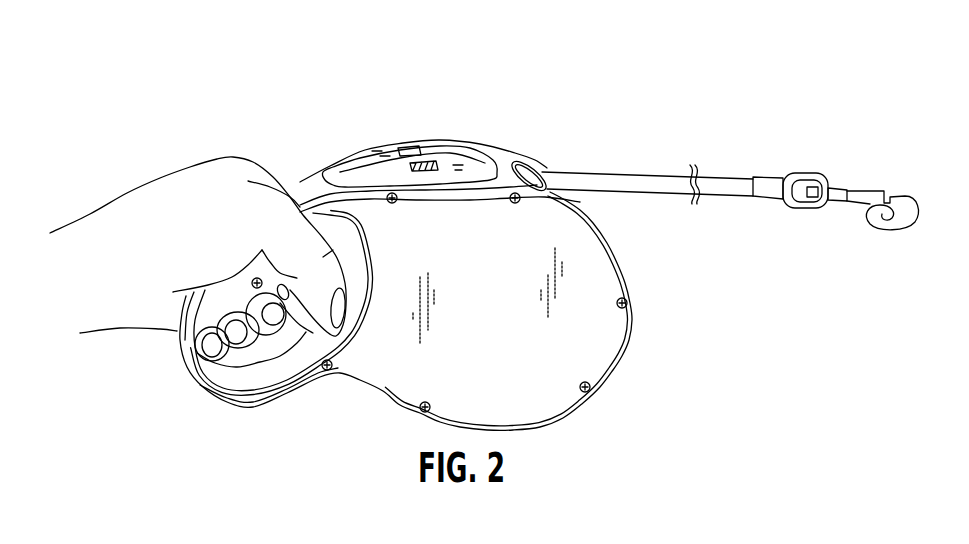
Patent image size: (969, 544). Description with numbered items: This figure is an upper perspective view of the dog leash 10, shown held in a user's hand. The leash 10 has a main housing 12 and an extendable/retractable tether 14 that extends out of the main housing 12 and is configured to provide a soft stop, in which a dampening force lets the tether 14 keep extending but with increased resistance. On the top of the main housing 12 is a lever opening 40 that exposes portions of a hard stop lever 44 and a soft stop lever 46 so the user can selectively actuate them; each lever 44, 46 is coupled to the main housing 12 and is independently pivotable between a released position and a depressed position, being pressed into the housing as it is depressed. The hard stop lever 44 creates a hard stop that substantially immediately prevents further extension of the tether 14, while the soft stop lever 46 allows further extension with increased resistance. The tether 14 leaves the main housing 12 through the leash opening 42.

The dog leash 10 is at (397, 95).
The main housing 12 is at (637, 342).
The extendable/retractable tether 14 is at (617, 172).
The lever opening 40 is at (490, 170).
The leash opening 42 is at (543, 162).
The hard stop lever 44 is at (363, 155).
The soft stop lever 46 is at (447, 163).